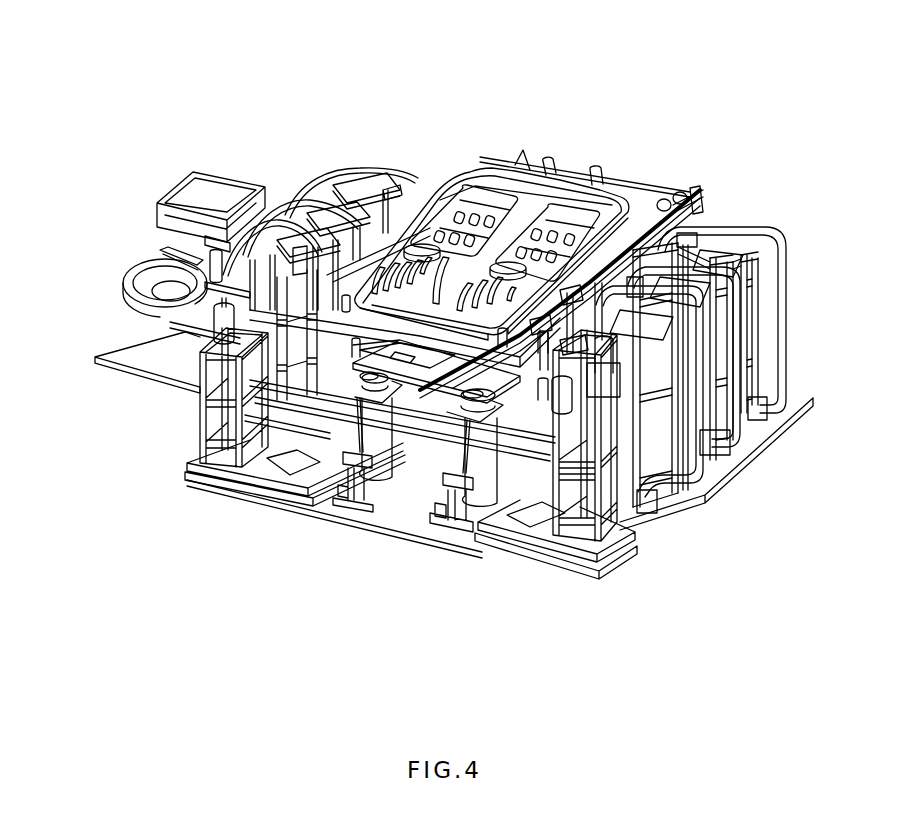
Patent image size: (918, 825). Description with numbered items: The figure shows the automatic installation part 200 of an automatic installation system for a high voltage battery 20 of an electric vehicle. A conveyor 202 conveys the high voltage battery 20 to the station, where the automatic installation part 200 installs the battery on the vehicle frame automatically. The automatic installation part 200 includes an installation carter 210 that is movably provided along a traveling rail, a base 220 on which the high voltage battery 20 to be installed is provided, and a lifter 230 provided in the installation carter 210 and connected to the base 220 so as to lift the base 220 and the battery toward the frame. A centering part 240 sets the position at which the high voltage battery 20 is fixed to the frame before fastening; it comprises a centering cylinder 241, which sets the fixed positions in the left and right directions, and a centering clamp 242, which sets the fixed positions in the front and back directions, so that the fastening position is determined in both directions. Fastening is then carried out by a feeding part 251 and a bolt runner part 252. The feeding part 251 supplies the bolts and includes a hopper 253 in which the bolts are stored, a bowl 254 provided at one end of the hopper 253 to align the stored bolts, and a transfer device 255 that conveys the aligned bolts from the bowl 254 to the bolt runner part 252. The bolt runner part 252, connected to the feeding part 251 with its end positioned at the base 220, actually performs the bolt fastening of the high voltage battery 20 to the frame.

The high voltage battery 20 is at (490, 178).
The automatic installation part 200 is at (203, 23).
The conveyor 202 is at (636, 198).
The installation carter 210 is at (407, 492).
The base 220 is at (352, 368).
The lifter 230 is at (484, 490).
The centering part 240 is at (220, 114).
The centering cylinder 241 is at (293, 250).
The centering clamp 242 is at (217, 250).
The feeding part 251 is at (52, 216).
The bolt runner part 252 is at (758, 336).
The hopper 253 is at (157, 211).
The bowl 254 is at (130, 278).
The transfer device 255 is at (185, 331).